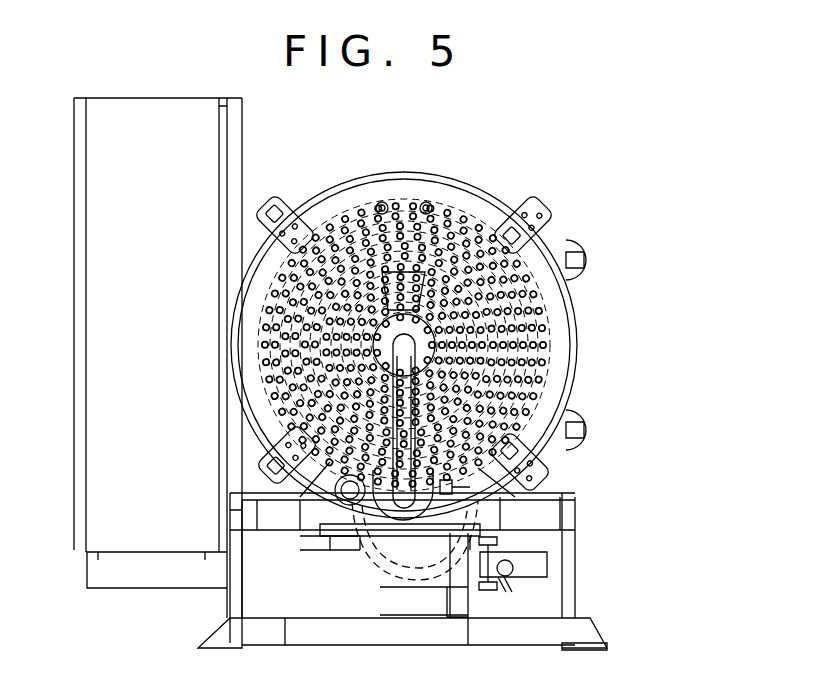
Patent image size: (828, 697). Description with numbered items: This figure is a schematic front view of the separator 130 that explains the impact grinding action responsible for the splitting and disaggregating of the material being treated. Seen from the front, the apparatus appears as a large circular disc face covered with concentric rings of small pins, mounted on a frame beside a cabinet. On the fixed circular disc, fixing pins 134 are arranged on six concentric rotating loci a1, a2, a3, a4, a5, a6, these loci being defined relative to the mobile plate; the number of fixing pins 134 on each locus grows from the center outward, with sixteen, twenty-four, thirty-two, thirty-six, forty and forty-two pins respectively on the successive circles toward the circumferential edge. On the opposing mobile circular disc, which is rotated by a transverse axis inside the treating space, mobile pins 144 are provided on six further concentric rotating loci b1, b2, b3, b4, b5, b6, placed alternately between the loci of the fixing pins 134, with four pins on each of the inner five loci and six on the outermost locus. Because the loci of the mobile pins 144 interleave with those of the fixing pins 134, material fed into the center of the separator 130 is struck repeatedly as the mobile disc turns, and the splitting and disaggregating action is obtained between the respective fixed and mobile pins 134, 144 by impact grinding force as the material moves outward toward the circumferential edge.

The separator 130 is at (404, 339).
The fixing pins 134 is at (466, 206).
The mobile pins 144 is at (428, 202).
The rotating locus a1 is at (377, 352).
The rotating locus a2 is at (356, 349).
The rotating locus a3 is at (340, 322).
The rotating locus a4 is at (353, 272).
The rotating locus a5 is at (358, 246).
The rotating locus a6 is at (395, 217).
The rotating locus b1 is at (440, 358).
The rotating locus b2 is at (461, 355).
The rotating locus b3 is at (482, 340).
The rotating locus b4 is at (500, 319).
The rotating locus b5 is at (495, 269).
The rotating locus b6 is at (474, 225).